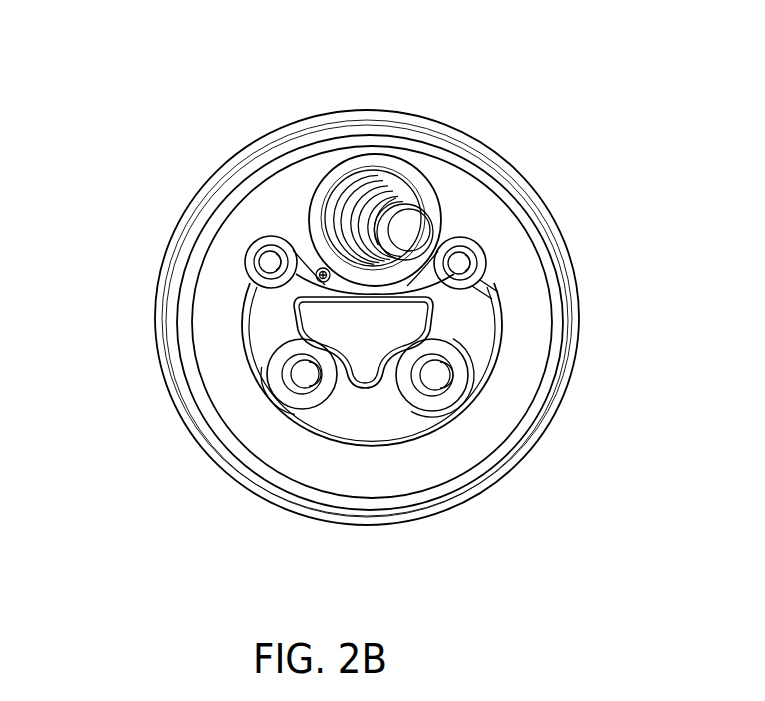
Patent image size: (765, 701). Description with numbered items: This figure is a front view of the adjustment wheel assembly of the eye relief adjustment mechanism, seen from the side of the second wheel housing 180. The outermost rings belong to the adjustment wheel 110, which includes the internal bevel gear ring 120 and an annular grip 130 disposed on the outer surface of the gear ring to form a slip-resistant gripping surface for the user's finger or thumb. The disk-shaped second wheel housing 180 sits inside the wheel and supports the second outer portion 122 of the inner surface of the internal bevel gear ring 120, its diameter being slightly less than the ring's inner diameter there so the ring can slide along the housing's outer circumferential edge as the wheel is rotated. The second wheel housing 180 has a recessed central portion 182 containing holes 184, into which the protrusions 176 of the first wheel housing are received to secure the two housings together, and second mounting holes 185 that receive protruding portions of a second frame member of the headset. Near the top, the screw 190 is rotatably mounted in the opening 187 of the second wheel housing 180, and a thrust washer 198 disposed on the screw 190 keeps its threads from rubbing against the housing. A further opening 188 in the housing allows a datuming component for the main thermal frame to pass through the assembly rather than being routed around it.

The adjustment wheel 110 is at (272, 130).
The internal bevel gear ring 120 is at (236, 462).
The second outer portion 122 is at (178, 330).
The annular grip 130 is at (215, 192).
The protrusions 176 is at (258, 260).
The second wheel housing 180 is at (225, 362).
The recessed central portion 182 is at (478, 338).
The holes 184 is at (256, 280).
The second mounting holes 185 is at (266, 384).
The opening 187 is at (342, 185).
The opening 188 is at (352, 357).
The screw 190 is at (388, 207).
The thrust washer 198 is at (362, 175).